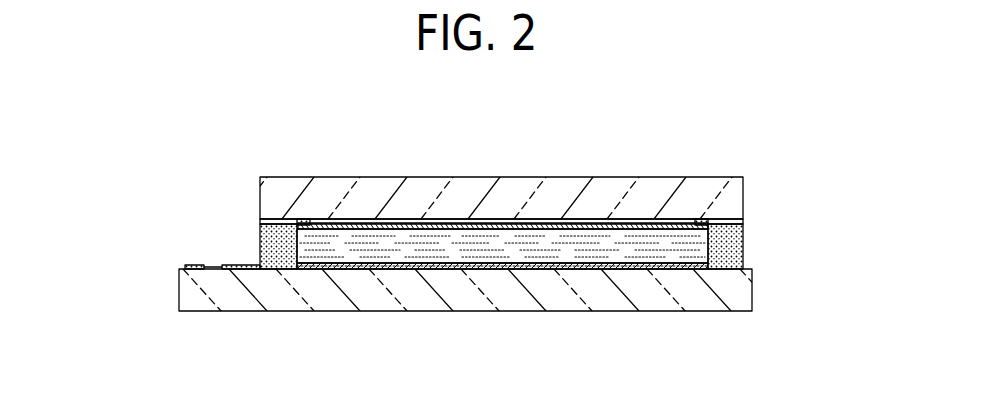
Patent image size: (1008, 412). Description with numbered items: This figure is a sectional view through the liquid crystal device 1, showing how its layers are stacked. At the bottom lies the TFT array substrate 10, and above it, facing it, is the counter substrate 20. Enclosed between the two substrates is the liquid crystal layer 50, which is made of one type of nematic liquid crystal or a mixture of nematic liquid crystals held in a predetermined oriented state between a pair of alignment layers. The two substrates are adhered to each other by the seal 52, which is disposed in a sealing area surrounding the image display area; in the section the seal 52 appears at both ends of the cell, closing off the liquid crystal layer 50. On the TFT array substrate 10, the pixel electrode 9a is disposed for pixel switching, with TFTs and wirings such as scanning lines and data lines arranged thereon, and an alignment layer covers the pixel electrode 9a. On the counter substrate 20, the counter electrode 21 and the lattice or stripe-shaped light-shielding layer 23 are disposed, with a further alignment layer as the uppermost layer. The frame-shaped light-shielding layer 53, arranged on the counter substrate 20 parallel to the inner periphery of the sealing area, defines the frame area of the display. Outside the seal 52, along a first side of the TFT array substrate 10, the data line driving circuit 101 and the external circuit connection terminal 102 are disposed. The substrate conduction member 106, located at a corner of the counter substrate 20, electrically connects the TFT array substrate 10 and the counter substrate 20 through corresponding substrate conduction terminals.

The liquid crystal device 1 is at (735, 84).
The TFT array substrate 10 is at (528, 305).
The counter substrate 20 is at (383, 188).
The counter electrode 21 is at (632, 221).
The lattice or stripe-shaped light-shielding layer 23 is at (488, 222).
The liquid crystal layer 50 is at (455, 252).
The seal 52 is at (268, 248).
The frame-shaped light-shielding layer 53 is at (306, 219).
The pixel electrode 9a is at (347, 270).
The data line driving circuit 101 is at (235, 265).
The external circuit connection terminal 102 is at (193, 265).
The substrate conduction member 106 is at (280, 270).